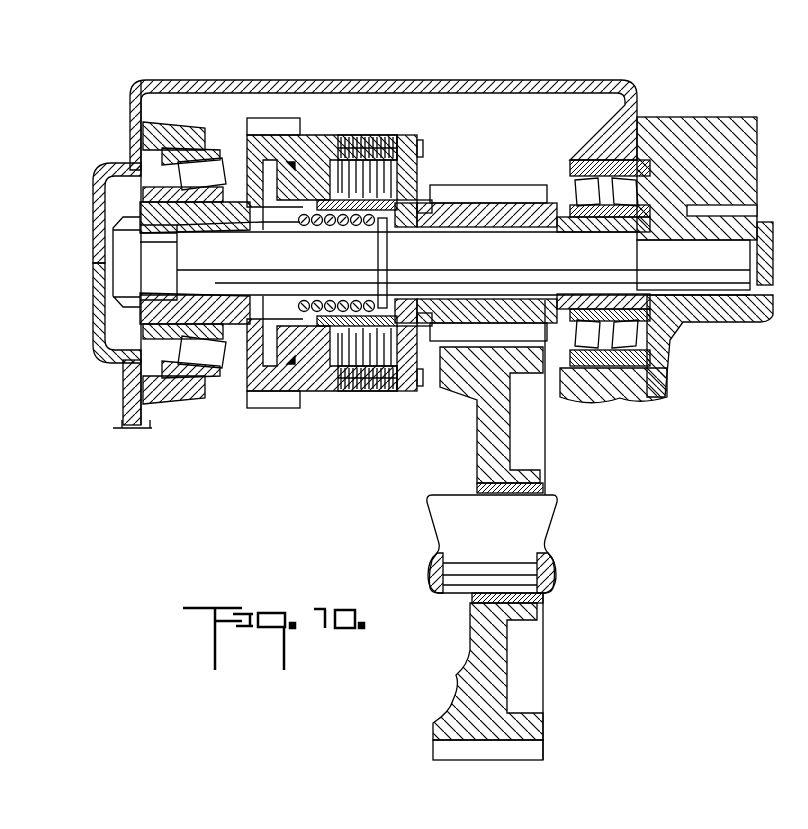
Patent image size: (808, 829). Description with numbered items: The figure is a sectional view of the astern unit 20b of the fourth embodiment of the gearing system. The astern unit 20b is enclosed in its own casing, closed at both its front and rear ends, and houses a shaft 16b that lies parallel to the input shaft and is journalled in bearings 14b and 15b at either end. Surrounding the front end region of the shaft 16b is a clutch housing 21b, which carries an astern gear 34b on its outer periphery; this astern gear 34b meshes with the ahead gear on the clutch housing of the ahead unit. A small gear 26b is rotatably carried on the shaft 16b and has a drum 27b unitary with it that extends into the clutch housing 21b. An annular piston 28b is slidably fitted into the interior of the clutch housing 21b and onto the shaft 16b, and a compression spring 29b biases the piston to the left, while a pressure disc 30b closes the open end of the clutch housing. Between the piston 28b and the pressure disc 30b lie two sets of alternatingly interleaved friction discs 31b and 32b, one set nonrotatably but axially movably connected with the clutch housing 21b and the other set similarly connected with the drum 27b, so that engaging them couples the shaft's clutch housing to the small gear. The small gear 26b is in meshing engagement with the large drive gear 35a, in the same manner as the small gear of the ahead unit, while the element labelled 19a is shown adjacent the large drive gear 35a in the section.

The bearing 14b is at (200, 170).
The astern gear 34b is at (268, 118).
The astern unit 20b is at (330, 75).
The clutch housing 21b is at (318, 135).
The friction discs 31b is at (377, 182).
The friction discs 32b is at (417, 200).
The drum 27b is at (432, 207).
The small gear 26b is at (513, 200).
The bearing 15b is at (585, 183).
The shaft 16b is at (331, 270).
The compression spring 29b is at (355, 298).
The annular piston 28b is at (290, 345).
The pressure disc 30b is at (410, 365).
The large drive gear 35a is at (527, 338).
The roller drum 19a is at (553, 521).